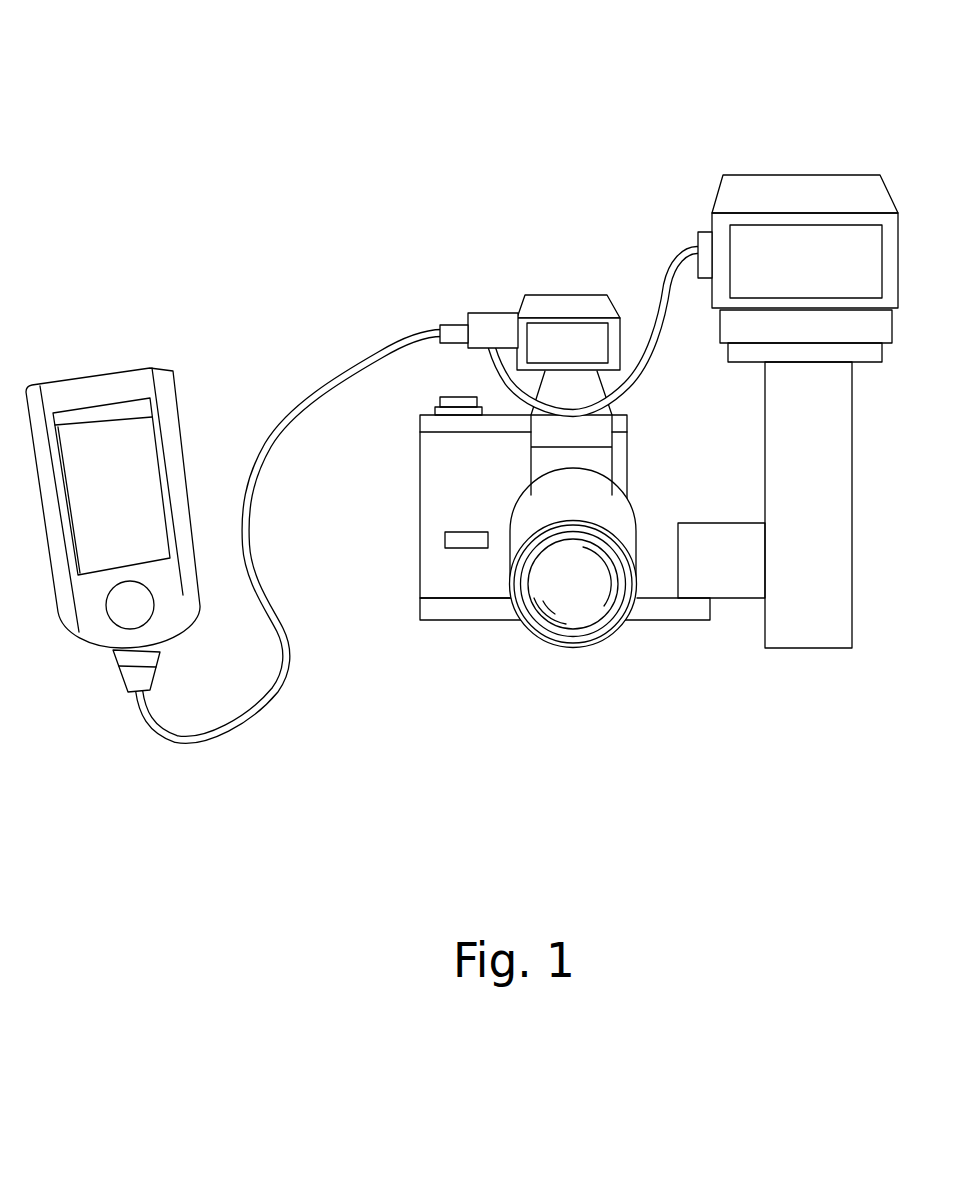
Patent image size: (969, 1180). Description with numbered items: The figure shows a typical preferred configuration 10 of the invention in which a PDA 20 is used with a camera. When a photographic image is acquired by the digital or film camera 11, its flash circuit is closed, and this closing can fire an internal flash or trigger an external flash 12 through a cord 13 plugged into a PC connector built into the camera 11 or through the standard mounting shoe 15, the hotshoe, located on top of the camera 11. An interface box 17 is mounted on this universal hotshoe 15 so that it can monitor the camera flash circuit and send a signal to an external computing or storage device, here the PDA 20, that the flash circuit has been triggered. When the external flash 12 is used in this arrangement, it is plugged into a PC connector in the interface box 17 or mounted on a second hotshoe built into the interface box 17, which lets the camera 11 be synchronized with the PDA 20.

The typical preferred configuration 10 is at (228, 232).
The camera 11 is at (474, 607).
The external flash 12 is at (807, 190).
The cord 13 is at (658, 298).
The mounting shoe 15 is at (613, 417).
The interface box 17 is at (563, 303).
The PDA 20 is at (84, 392).